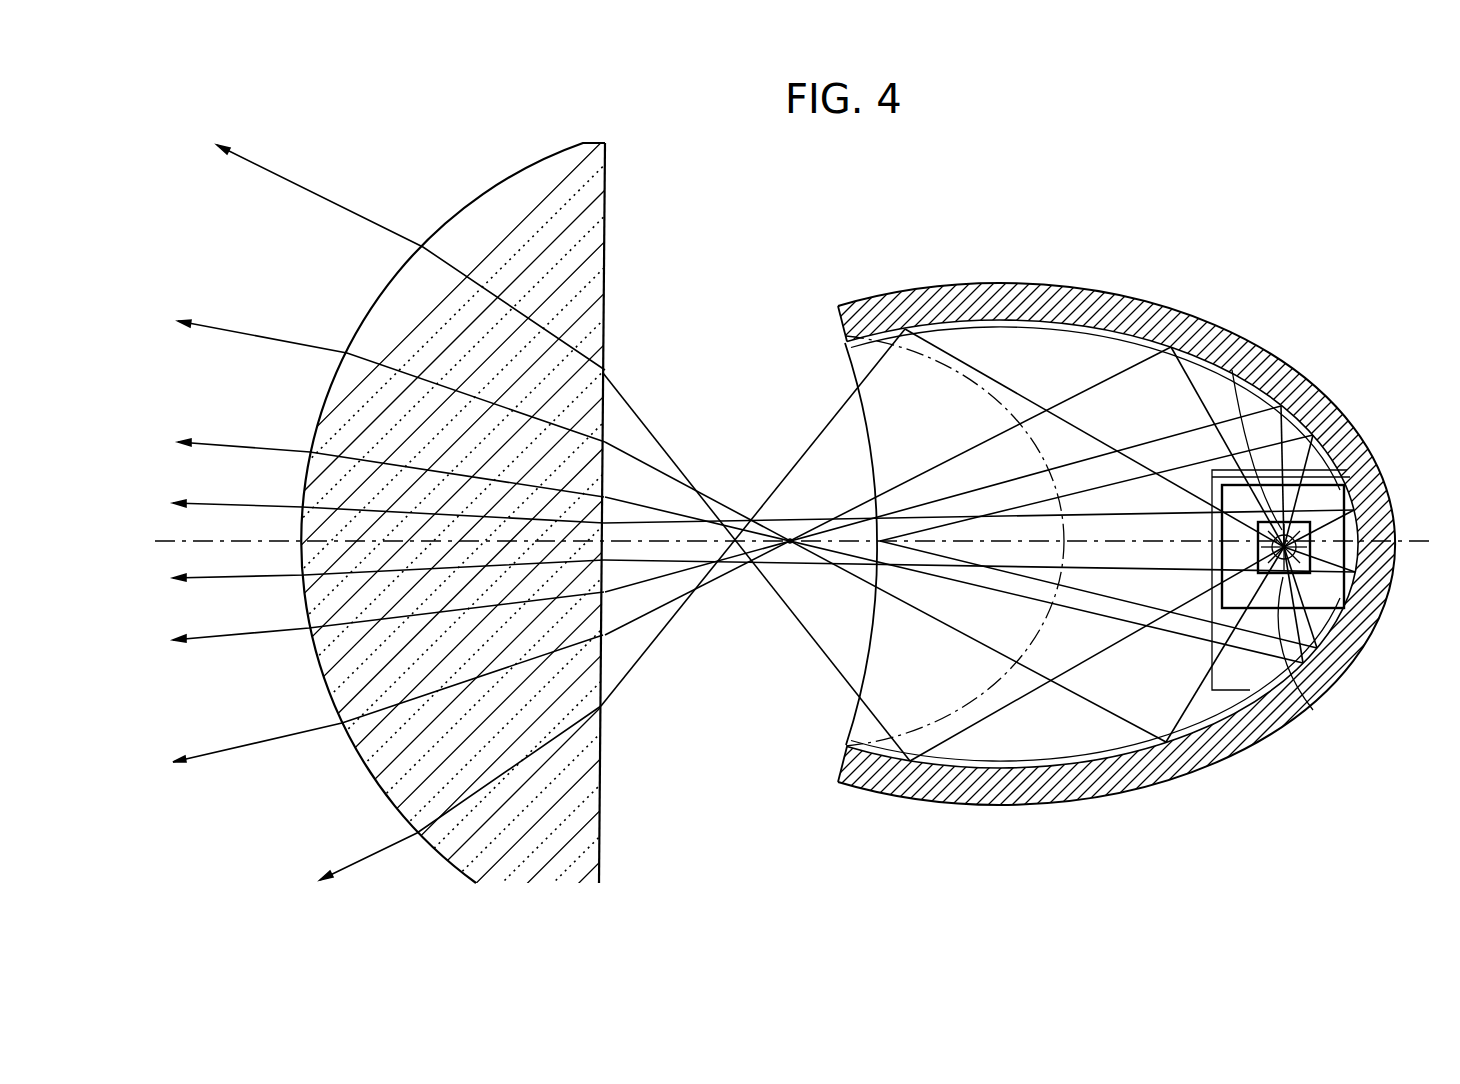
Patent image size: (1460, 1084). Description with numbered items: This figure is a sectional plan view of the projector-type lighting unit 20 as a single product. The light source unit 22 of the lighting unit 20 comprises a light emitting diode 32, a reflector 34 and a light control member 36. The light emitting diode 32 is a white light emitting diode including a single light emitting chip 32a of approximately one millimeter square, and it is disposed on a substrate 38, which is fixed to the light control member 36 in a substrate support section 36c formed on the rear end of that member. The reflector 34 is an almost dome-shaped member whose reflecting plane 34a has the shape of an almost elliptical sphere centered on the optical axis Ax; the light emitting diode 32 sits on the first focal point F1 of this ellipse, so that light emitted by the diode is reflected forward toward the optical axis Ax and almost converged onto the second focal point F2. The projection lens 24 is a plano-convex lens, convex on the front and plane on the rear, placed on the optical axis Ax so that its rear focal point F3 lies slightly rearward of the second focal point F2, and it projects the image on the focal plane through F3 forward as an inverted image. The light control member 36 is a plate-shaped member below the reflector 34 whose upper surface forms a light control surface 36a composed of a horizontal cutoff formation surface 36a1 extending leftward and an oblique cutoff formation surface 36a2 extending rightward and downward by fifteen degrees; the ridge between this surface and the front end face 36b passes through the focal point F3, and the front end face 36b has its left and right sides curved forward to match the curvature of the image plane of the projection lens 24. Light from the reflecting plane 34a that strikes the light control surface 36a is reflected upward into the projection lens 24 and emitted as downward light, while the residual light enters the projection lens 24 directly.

The lighting unit 20 is at (1175, 202).
The light source unit 22 is at (822, 292).
The projection lens 24 is at (455, 206).
The light emitting diode 32 is at (1365, 565).
The light emitting chip 32a is at (1320, 520).
The reflector 34 is at (1230, 327).
The reflecting plane 34a is at (1065, 300).
The light control member 36 is at (850, 373).
The light control surface 36a is at (776, 742).
The horizontal cutoff formation surface 36a1 is at (897, 643).
The oblique cutoff formation surface 36a2 is at (752, 585).
The front end face 36b is at (848, 723).
The substrate support section 36c is at (1238, 668).
The substrate 38 is at (1352, 457).
The first focal point F1 is at (1283, 625).
The second focal point F2 is at (878, 517).
The focal point on the rear side F3 is at (880, 548).
The optical axis Ax is at (213, 540).